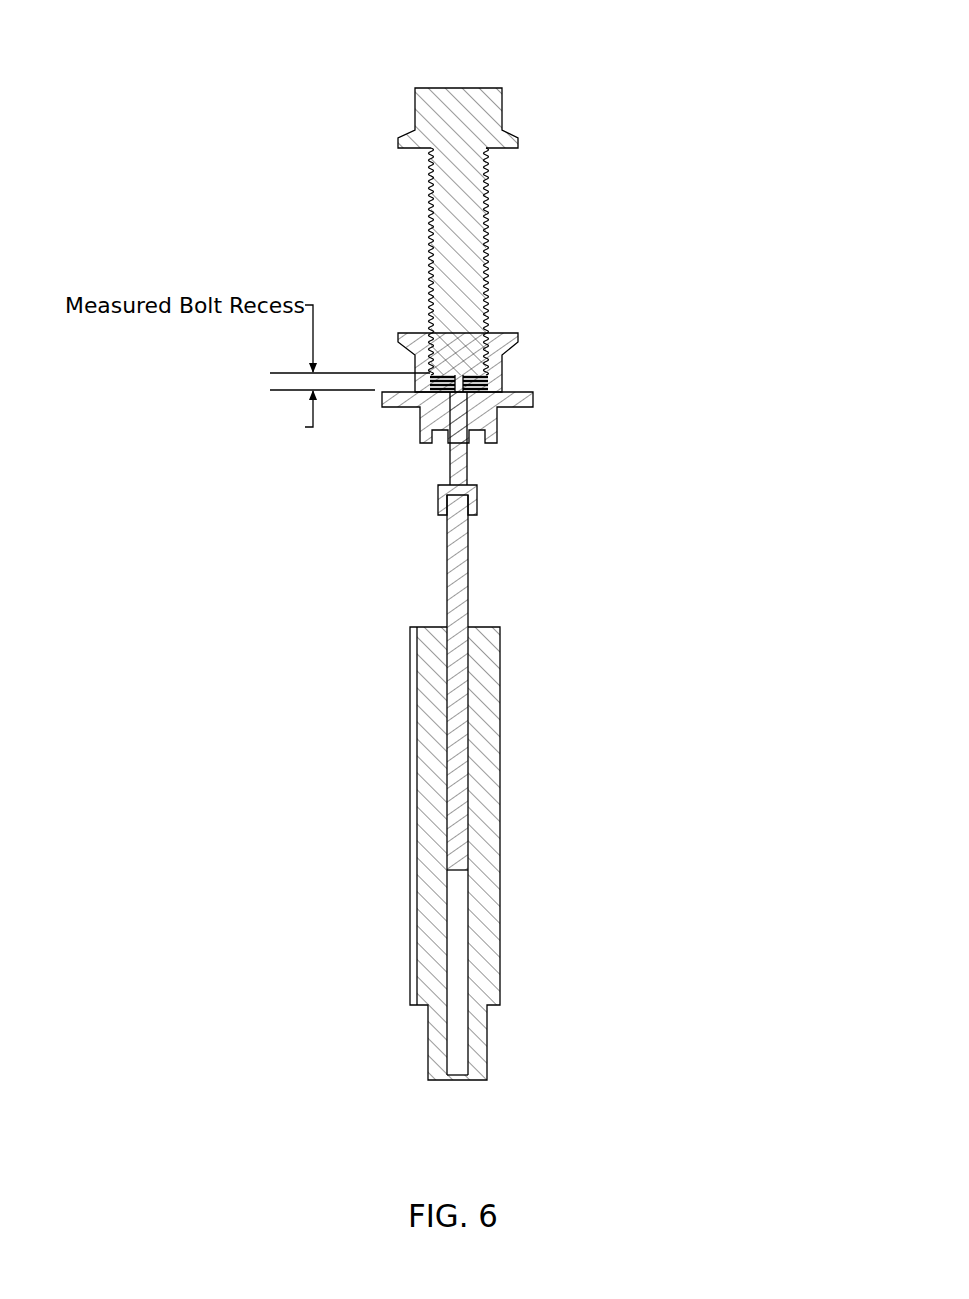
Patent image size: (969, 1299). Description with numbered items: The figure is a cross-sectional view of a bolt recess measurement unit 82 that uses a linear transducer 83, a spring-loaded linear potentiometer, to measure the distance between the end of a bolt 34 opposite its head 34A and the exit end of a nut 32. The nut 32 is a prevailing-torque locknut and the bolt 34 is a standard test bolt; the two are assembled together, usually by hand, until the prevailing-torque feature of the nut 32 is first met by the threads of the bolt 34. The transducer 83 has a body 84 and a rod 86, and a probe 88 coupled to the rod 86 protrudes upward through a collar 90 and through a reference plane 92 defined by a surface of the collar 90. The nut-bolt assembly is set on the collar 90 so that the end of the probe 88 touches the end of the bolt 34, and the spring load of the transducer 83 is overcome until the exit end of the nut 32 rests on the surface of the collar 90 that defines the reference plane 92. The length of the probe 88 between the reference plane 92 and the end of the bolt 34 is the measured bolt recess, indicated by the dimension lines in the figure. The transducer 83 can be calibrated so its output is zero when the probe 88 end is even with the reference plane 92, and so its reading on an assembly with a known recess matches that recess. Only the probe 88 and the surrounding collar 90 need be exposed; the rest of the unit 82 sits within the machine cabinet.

The bolt 34 is at (487, 232).
The head 34A is at (438, 107).
The nut 32 is at (520, 337).
The reference plane 92 is at (527, 376).
The collar 90 is at (535, 398).
The probe 88 is at (467, 467).
The rod 86 is at (470, 568).
The body 84 is at (501, 757).
The bolt recess measurement unit 82 is at (681, 337).
The linear transducer 83 is at (386, 946).